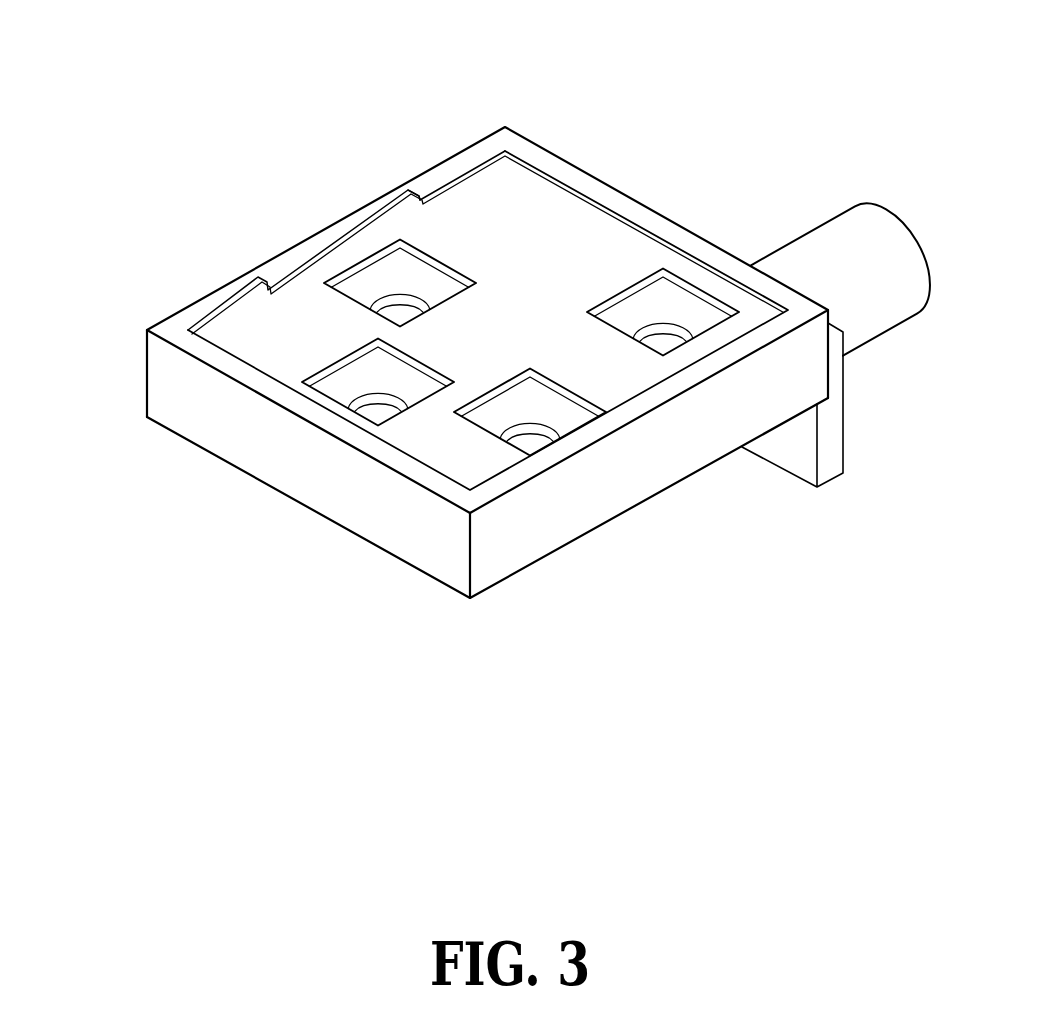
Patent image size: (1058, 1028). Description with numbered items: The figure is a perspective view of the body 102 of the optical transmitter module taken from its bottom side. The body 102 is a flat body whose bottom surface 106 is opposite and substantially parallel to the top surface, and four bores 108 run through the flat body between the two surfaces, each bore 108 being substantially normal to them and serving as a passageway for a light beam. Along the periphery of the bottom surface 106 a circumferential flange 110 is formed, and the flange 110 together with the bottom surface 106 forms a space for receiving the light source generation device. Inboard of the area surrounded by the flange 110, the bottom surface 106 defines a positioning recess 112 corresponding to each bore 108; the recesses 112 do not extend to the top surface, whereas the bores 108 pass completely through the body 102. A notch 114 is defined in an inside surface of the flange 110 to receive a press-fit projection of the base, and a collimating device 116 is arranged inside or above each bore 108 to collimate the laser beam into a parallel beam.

The body 102 is at (496, 370).
The bottom surface 106 is at (552, 290).
The bore 108 is at (412, 303).
The circumferential flange 110 is at (435, 555).
The positioning recess 112 is at (357, 292).
The notch 114 is at (377, 226).
The collimating device 116 is at (397, 310).